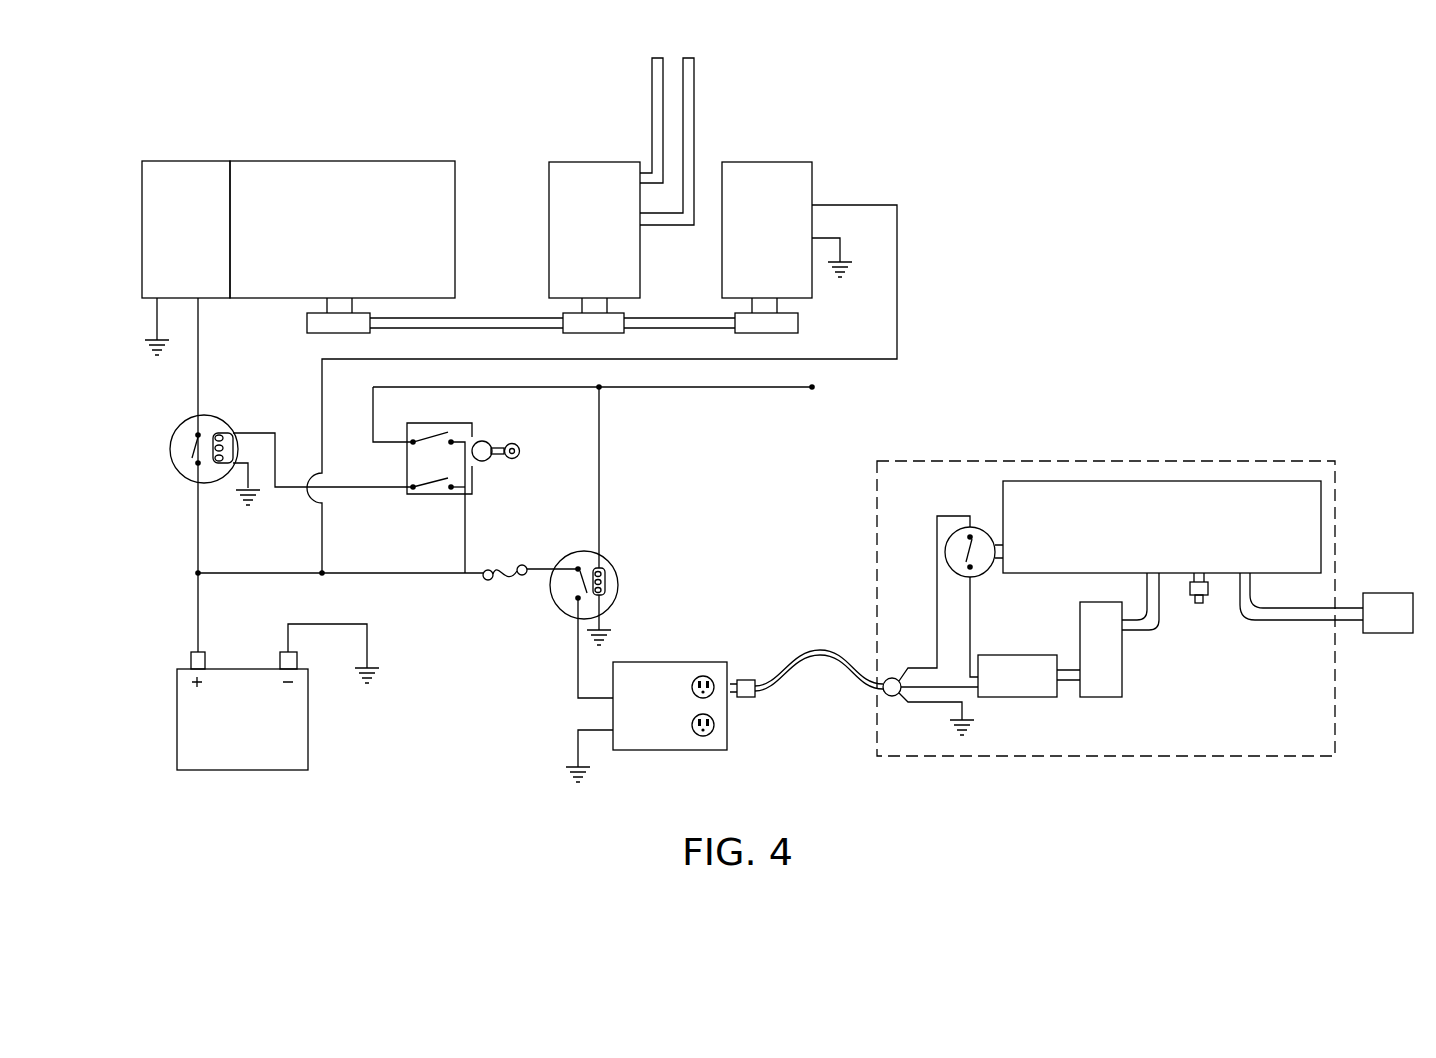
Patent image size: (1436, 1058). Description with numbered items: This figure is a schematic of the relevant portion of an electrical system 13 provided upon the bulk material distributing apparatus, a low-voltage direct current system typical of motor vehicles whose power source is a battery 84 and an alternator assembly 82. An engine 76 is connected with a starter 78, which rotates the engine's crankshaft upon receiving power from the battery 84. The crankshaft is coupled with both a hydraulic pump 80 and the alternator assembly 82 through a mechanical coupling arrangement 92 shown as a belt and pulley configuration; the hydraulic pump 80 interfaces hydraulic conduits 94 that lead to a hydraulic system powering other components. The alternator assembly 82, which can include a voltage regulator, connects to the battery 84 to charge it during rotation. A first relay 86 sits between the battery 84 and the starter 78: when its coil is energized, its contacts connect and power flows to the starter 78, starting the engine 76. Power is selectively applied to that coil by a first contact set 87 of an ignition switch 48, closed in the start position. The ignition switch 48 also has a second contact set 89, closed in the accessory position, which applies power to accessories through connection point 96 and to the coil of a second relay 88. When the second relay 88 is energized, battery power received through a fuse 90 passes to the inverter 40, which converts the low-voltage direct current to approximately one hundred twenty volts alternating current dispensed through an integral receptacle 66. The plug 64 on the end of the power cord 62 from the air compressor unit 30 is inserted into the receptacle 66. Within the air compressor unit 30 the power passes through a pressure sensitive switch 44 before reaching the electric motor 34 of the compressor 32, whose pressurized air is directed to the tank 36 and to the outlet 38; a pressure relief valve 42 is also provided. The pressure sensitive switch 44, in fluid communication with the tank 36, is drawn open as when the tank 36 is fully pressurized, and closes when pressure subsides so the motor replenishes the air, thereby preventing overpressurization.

The electrical system 13 is at (177, 517).
The air compressor unit 30 is at (1100, 433).
The compressor 32 is at (1086, 664).
The electric motor 34 is at (1002, 690).
The tank 36 is at (1147, 541).
The outlet 38 is at (1373, 627).
The inverter 40 is at (648, 750).
The pressure relief valve 42 is at (1207, 612).
The pressure sensitive switch 44 is at (990, 575).
The ignition switch 48 is at (495, 467).
The power cord 62 is at (820, 650).
The plug 64 is at (746, 680).
The receptacle 66 is at (690, 672).
The engine 76 is at (313, 246).
The starter 78 is at (168, 246).
The hydraulic pump 80 is at (579, 246).
The alternator assembly 82 is at (752, 246).
The battery 84 is at (227, 734).
The first relay 86 is at (224, 410).
The first contact set 87 is at (430, 492).
The second relay 88 is at (622, 553).
The second contact set 89 is at (467, 425).
The fuse 90 is at (502, 585).
The mechanical coupling arrangement 92 is at (500, 307).
The hydraulic conduits 94 is at (712, 62).
The connection point 96 is at (808, 400).